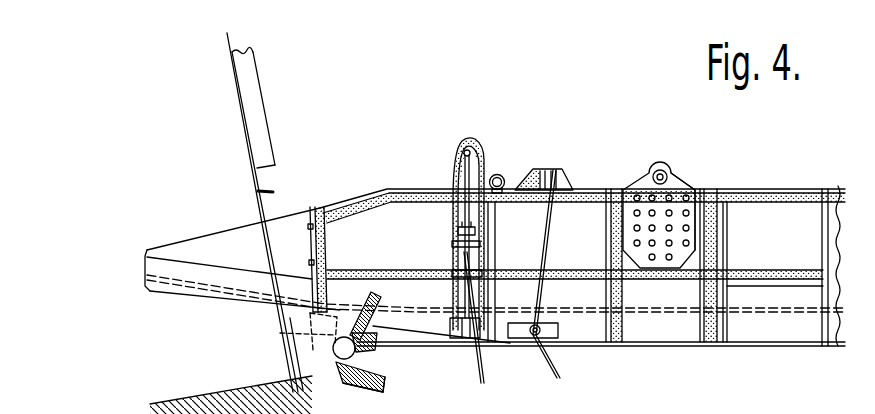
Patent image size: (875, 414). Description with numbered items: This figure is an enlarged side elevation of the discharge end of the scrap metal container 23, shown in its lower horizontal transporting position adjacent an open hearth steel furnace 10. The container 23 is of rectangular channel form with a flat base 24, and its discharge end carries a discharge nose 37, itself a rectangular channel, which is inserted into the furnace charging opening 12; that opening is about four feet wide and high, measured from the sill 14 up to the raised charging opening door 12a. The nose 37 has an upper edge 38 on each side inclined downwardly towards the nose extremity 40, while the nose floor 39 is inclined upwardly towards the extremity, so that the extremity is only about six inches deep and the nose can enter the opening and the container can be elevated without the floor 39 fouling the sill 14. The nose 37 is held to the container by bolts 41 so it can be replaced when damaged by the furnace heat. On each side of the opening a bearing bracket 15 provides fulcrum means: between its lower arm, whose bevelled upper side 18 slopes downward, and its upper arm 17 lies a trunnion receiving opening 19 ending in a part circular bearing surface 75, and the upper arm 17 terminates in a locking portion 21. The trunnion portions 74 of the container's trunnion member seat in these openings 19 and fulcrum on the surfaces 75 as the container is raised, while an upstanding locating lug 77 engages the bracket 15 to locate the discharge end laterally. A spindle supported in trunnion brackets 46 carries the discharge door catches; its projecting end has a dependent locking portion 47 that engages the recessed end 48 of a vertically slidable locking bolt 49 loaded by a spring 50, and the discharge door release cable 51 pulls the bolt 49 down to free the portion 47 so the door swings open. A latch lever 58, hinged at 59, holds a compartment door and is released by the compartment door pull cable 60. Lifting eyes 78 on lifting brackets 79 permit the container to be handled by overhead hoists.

The open hearth steel furnace 10 is at (227, 88).
The charging opening 12 is at (280, 181).
The charging opening door 12a is at (258, 111).
The sill 14 is at (231, 395).
The bearing bracket 15 is at (293, 334).
The upper arm 17 is at (373, 326).
The upper side of lower arm 18 is at (385, 392).
The trunnion receiving opening 19 is at (390, 378).
The locking portion 21 is at (350, 355).
The scrap metal container 23 is at (810, 222).
The base 24 is at (795, 318).
The discharge nose 37 is at (195, 252).
The upper edge 38 is at (238, 227).
The nose floor 39 is at (233, 295).
The nose extremity 40 is at (145, 268).
The bolts 41 is at (313, 269).
The trunnion bracket 46 is at (460, 170).
The locking portion 47 is at (466, 217).
The recessed end 48 is at (459, 230).
The locking bolt 49 is at (480, 284).
The spring 50 is at (465, 258).
The discharge door release cable 51 is at (481, 369).
The latch lever 58 is at (561, 175).
The hinge 59 is at (537, 167).
The compartment door pull cable 60 is at (553, 364).
The trunnion portion 74 is at (353, 363).
The part circular bearing surface 75 is at (336, 345).
The locating lug 77 is at (340, 380).
The lifting eye 78 is at (663, 175).
The lifting bracket 79 is at (682, 186).